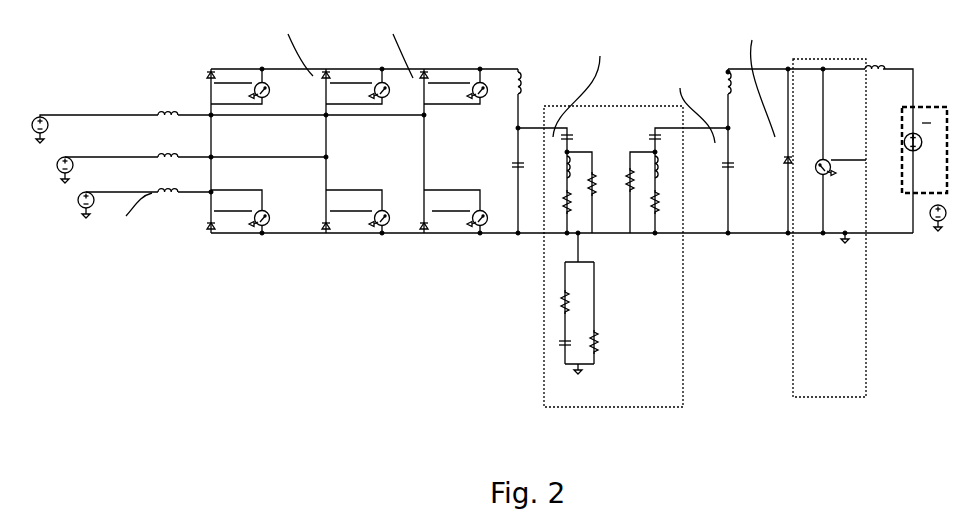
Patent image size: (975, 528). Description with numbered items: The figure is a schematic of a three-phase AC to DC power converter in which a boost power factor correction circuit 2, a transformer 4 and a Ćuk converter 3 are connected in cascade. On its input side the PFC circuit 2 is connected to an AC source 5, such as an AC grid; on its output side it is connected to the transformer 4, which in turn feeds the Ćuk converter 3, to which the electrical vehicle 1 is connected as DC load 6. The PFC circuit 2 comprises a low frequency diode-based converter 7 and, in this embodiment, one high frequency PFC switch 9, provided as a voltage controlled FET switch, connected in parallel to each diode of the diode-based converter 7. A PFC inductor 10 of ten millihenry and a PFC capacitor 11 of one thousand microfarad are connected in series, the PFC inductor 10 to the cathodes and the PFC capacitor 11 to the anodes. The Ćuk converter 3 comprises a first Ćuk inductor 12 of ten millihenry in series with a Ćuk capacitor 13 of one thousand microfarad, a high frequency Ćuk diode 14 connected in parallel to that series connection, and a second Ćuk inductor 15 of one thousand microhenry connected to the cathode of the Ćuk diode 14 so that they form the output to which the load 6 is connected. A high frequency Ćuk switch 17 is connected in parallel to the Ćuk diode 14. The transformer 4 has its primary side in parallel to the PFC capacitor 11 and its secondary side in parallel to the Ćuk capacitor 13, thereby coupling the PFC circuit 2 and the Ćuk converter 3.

The electrical vehicle 1 is at (907, 288).
The boost power factor correction circuit 2 is at (515, 250).
The Ćuk converter 3 is at (781, 248).
The transformer 4 is at (685, 433).
The AC source 5 is at (212, 433).
The DC load 6 is at (910, 152).
The low frequency diode-based converter 7 is at (361, 161).
The high frequency PFC switch 9 is at (377, 84).
The PFC inductor 10 is at (521, 70).
The PFC capacitor 11 is at (516, 175).
The first Ćuk inductor 12 is at (724, 70).
The Ćuk capacitor 13 is at (727, 175).
The high frequency Ćuk diode 14 is at (787, 172).
The second Ćuk inductor 15 is at (882, 67).
The high frequency Ćuk switch 17 is at (818, 178).